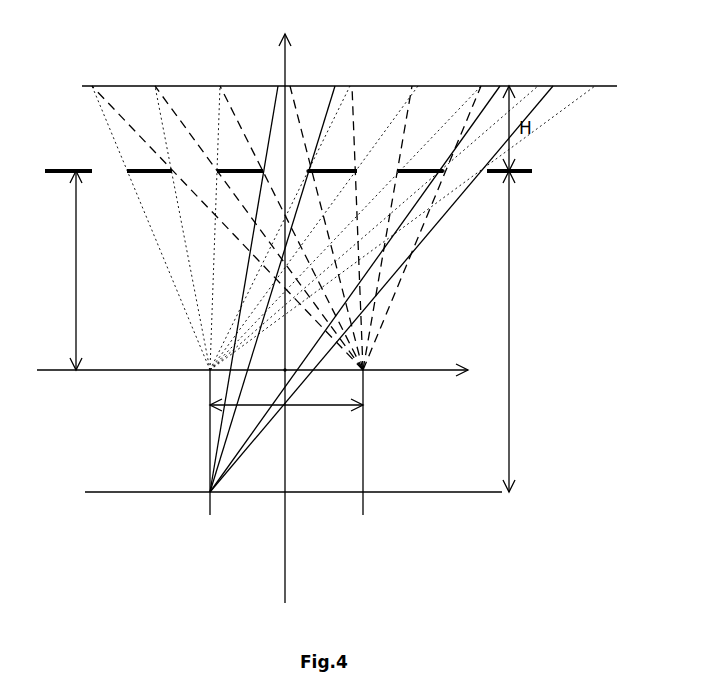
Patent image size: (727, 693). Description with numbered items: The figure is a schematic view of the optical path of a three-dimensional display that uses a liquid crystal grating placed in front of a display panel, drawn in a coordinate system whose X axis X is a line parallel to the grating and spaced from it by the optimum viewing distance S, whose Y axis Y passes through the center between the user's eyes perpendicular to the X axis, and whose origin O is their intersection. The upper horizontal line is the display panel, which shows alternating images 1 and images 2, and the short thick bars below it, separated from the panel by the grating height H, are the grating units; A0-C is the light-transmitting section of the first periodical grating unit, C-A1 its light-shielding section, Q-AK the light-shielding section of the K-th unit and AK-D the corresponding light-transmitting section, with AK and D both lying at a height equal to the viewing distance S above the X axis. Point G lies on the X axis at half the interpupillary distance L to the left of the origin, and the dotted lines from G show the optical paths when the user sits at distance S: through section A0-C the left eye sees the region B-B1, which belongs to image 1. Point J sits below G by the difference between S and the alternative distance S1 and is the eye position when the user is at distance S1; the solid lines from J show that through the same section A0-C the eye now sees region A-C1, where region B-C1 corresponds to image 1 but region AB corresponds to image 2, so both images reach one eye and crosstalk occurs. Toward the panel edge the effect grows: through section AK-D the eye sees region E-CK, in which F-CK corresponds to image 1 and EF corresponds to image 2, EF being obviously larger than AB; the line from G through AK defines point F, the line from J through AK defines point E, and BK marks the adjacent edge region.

The image 1 is at (256, 216).
The image 2 is at (224, 216).
The point A is at (244, 277).
The point B is at (325, 216).
The point C1 is at (272, 277).
The point B1 is at (354, 216).
The point E is at (358, 277).
The point F is at (374, 216).
The point CK is at (389, 277).
The point BK is at (410, 216).
The point A0 is at (240, 184).
The point C is at (301, 182).
The point A1 is at (332, 185).
The point Q is at (420, 185).
The point AK is at (451, 184).
The point D is at (506, 186).
The point G is at (196, 442).
The origin O is at (276, 379).
The height of grating position H is at (373, 442).
The point J is at (293, 502).
The X axis X is at (260, 384).
The Y axis Y is at (293, 314).
The optimum viewing distance S is at (63, 270).
The viewing distance S1 is at (522, 289).
The interpupillary distance L is at (286, 421).